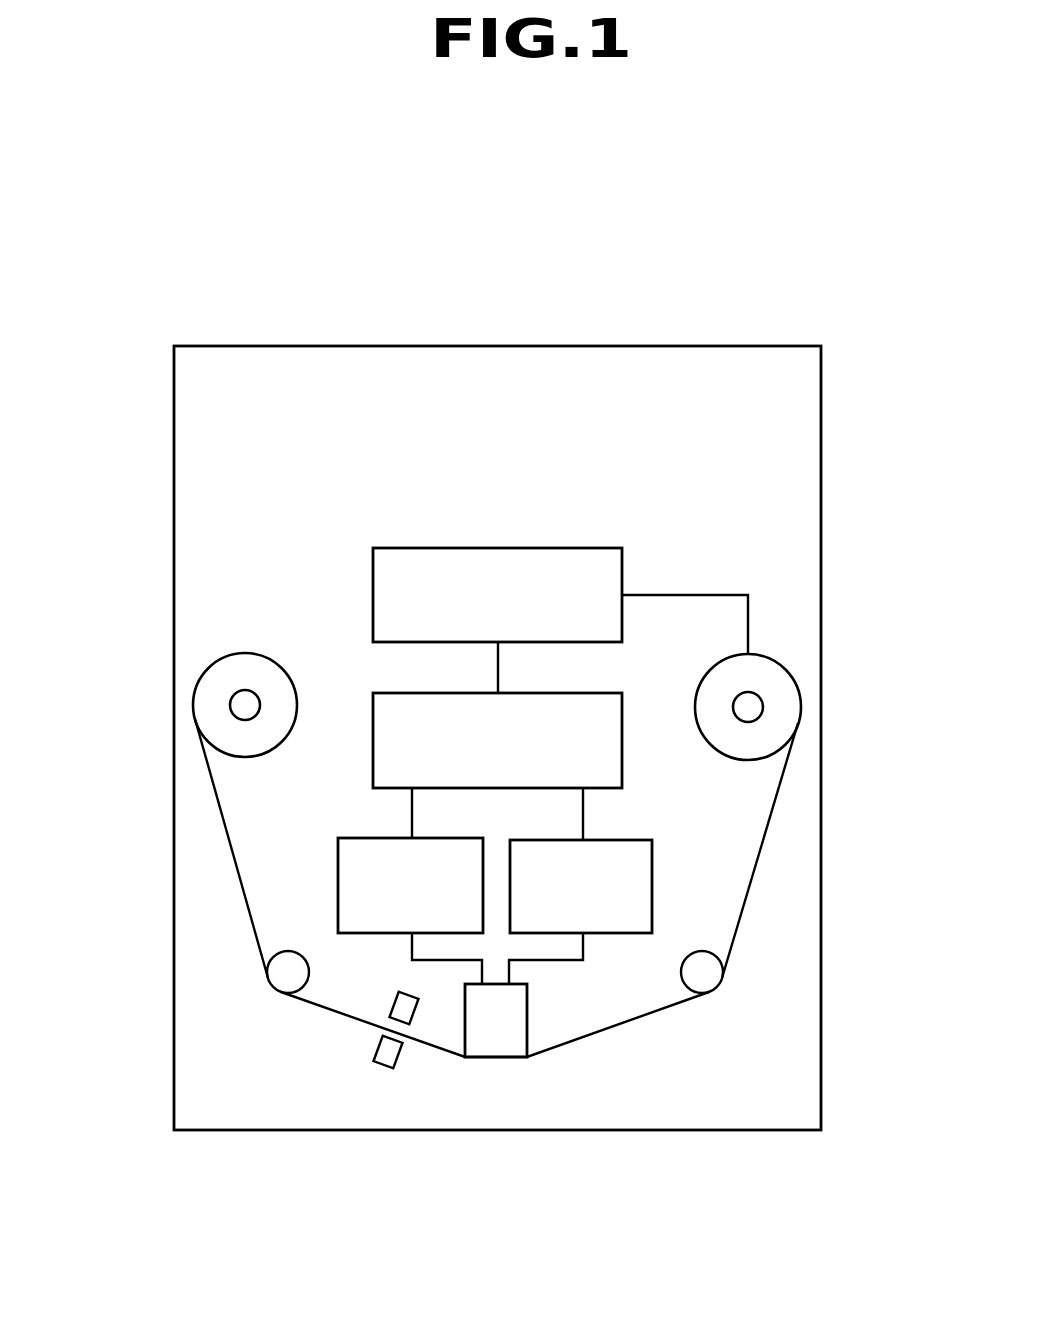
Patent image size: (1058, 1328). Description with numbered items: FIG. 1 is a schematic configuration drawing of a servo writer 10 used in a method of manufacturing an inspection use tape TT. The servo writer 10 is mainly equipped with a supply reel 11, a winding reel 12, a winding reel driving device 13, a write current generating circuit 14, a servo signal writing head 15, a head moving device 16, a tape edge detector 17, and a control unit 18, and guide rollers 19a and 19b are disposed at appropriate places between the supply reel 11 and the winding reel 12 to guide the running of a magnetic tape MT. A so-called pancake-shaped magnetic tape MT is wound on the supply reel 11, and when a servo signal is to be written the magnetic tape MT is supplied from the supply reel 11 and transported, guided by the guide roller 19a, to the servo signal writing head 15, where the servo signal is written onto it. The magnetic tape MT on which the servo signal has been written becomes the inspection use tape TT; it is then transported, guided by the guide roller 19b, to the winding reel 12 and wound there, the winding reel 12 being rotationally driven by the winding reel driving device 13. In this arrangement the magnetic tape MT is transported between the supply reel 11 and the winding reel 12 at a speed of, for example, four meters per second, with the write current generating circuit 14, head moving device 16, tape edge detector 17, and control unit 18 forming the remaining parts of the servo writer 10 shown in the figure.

The servo writer 10 is at (595, 346).
The supply reel 11 is at (248, 652).
The winding reel 12 is at (785, 665).
The winding reel driving device 13 is at (583, 548).
The write current generating circuit 14 is at (372, 933).
The servo signal writing head 15 is at (527, 1020).
The head moving device 16 is at (622, 933).
The tape edge detector 17 is at (403, 1060).
The control unit 18 is at (622, 762).
The guide roller 19a is at (282, 993).
The guide roller 19b is at (710, 993).
The magnetic tape MT is at (233, 853).
The inspection use tape TT is at (772, 812).